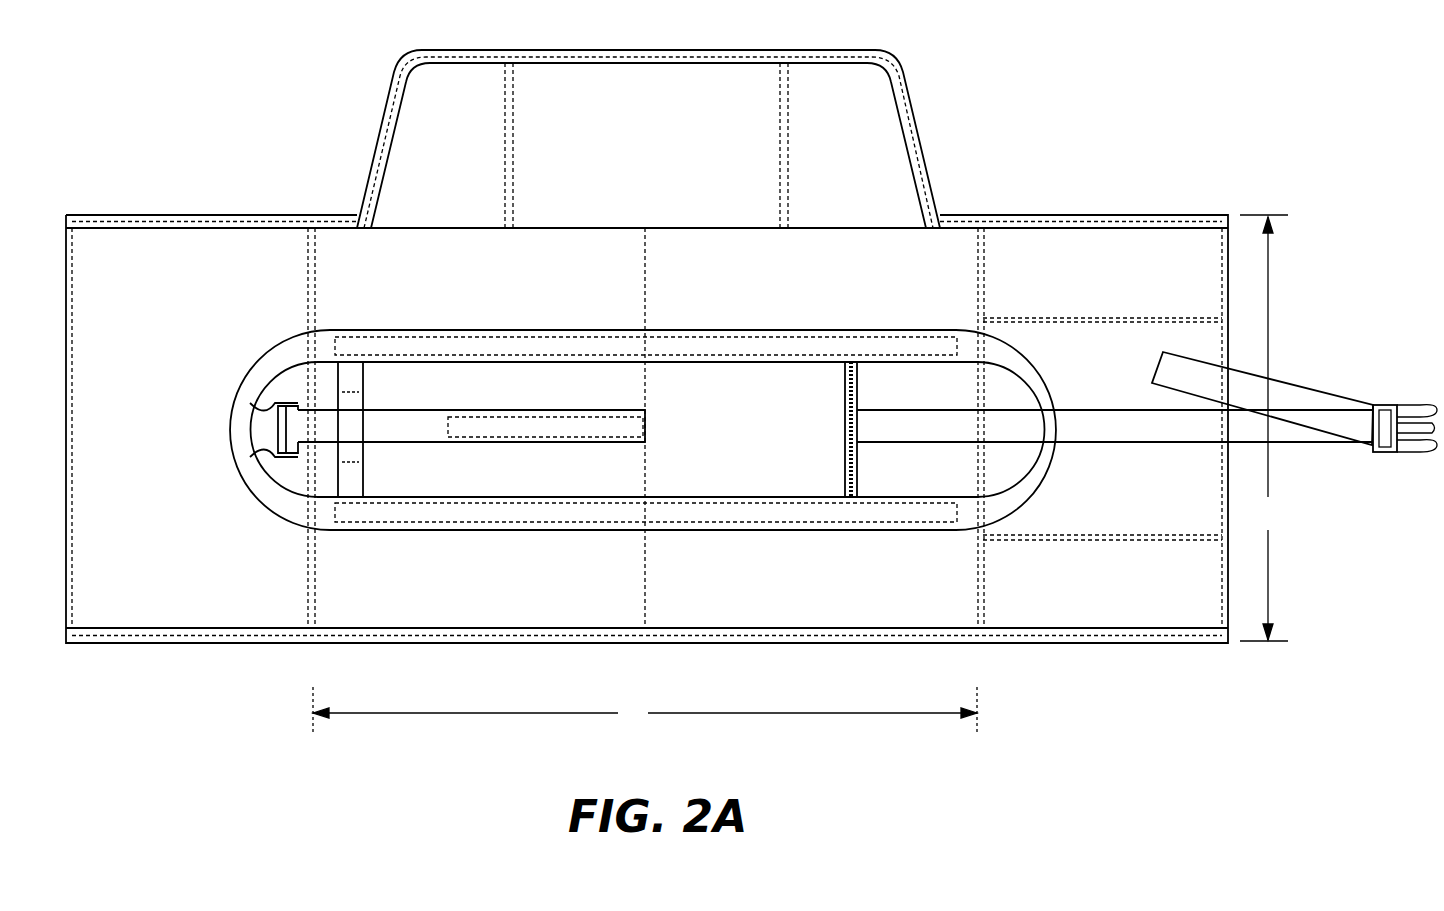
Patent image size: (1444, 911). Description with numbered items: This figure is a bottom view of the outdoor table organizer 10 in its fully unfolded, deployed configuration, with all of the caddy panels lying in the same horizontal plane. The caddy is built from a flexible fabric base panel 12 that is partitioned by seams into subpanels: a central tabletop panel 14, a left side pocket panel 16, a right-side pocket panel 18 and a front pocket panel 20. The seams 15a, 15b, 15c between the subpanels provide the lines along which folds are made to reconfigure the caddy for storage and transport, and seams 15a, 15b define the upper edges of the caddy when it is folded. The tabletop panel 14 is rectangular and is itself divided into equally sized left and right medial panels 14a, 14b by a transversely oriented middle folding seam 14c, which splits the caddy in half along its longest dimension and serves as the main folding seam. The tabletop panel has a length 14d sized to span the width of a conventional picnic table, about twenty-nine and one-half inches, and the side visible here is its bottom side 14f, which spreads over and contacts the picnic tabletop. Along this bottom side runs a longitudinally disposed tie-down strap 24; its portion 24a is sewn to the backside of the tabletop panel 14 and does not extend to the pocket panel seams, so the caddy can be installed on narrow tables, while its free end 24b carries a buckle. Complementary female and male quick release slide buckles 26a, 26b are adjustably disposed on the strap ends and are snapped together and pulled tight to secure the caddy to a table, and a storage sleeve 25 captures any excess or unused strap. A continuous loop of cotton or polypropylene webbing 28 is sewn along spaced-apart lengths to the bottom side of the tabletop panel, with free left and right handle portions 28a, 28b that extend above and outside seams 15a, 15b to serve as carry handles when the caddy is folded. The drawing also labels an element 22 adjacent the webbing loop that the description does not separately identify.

The outdoor table organizer 10 is at (1130, 68).
The flexible fabric base panel 12 is at (988, 245).
The tabletop panel 14 is at (648, 498).
The left medial panel 14a is at (383, 610).
The right medial panel 14b is at (857, 610).
The middle folding seam 14c is at (645, 593).
The length of tabletop panel 14d is at (505, 713).
The bottom side of tabletop panel 14f is at (748, 440).
The seam 15a is at (312, 252).
The seam 15b is at (1033, 223).
The seam 15c is at (428, 228).
The left side pocket panel 16 is at (150, 250).
The right-side pocket panel 18 is at (1117, 610).
The front pocket panel 20 is at (833, 325).
The outer sleeve 22 is at (614, 424).
The tie-down strap 24 is at (808, 438).
The sewn portion of tie-down strap 24a is at (483, 437).
The free left end of tie-down strap 24b is at (1130, 425).
The storage sleeve 25 is at (862, 477).
The female quick release slide buckle 26a is at (265, 432).
The male quick release slide buckle 26b is at (1377, 450).
The continuous loop of webbing 28 is at (877, 345).
The left handle portion 28a is at (243, 440).
The right handle portion 28b is at (1022, 512).